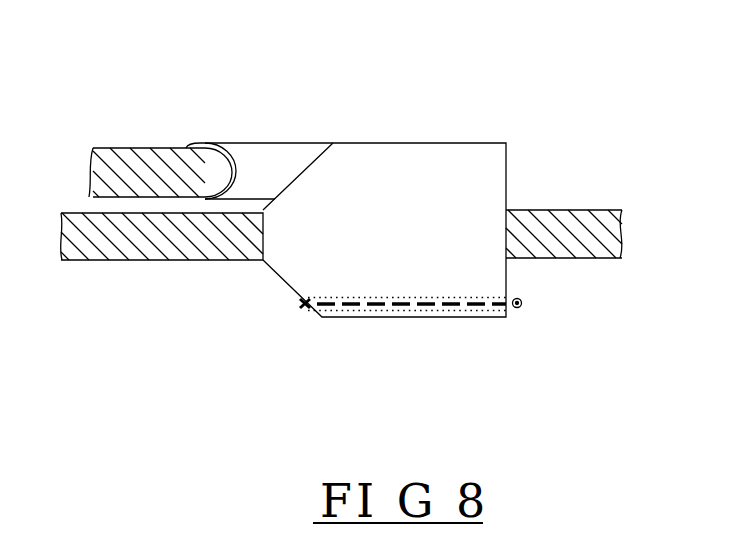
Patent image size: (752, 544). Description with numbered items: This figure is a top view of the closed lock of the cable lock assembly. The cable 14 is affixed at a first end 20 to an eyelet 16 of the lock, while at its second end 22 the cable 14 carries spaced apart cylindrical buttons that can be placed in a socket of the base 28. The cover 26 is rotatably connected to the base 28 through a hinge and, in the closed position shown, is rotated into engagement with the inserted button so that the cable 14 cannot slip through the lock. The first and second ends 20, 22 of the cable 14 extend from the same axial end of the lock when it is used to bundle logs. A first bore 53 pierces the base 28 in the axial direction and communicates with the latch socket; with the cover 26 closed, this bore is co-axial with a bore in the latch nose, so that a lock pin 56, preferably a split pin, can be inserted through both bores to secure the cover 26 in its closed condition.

The cable 14 is at (603, 210).
The eyelet 16 is at (269, 133).
The first end 20 is at (128, 149).
The second end 22 is at (162, 274).
The cover 26 is at (384, 191).
The base 28 is at (197, 133).
The first bore 53 is at (403, 348).
The lock pin 56 is at (561, 332).